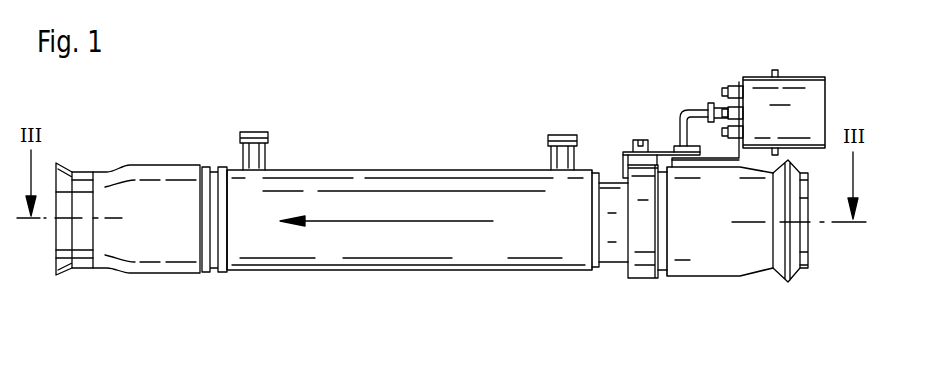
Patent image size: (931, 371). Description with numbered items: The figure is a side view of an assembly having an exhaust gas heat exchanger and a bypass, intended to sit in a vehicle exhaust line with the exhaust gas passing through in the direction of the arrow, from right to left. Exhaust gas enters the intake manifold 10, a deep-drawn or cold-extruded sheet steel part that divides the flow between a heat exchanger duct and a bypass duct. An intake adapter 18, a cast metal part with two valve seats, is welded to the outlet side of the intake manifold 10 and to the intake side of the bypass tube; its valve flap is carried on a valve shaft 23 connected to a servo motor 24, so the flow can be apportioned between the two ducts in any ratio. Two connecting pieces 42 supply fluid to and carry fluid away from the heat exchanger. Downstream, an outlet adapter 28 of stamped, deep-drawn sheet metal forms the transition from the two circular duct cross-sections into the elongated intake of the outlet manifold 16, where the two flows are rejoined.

The intake manifold 10 is at (733, 262).
The outlet manifold 16 is at (153, 185).
The intake adapter 18 is at (638, 195).
The valve shaft 23 is at (642, 140).
The servo motor 24 is at (805, 98).
The outlet adapter 28 is at (205, 165).
The connecting pieces 42 is at (255, 148).